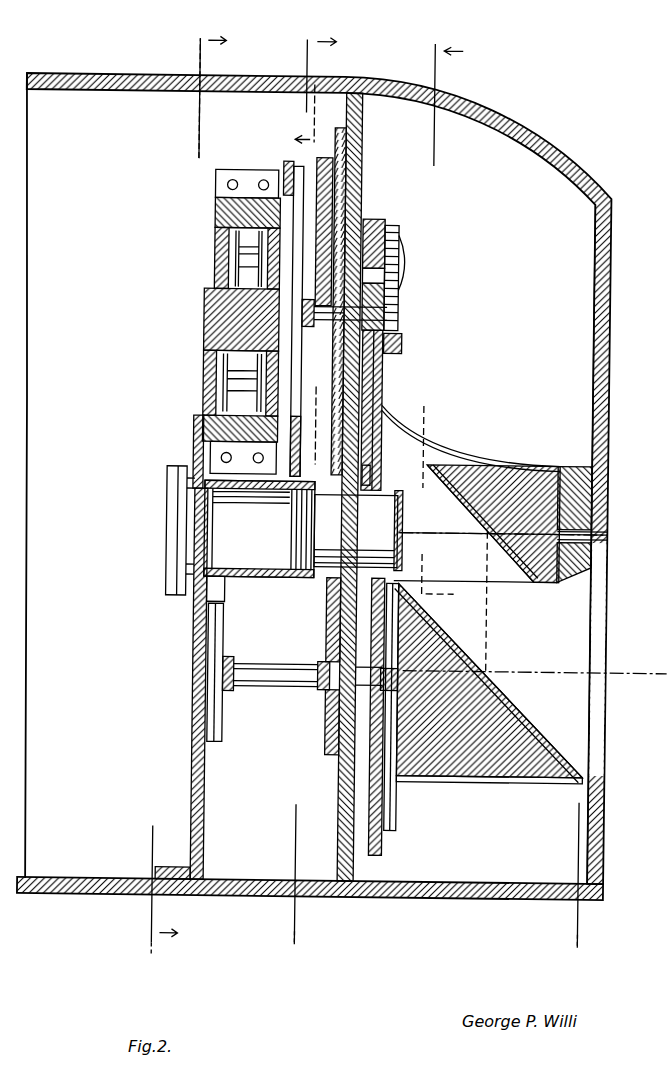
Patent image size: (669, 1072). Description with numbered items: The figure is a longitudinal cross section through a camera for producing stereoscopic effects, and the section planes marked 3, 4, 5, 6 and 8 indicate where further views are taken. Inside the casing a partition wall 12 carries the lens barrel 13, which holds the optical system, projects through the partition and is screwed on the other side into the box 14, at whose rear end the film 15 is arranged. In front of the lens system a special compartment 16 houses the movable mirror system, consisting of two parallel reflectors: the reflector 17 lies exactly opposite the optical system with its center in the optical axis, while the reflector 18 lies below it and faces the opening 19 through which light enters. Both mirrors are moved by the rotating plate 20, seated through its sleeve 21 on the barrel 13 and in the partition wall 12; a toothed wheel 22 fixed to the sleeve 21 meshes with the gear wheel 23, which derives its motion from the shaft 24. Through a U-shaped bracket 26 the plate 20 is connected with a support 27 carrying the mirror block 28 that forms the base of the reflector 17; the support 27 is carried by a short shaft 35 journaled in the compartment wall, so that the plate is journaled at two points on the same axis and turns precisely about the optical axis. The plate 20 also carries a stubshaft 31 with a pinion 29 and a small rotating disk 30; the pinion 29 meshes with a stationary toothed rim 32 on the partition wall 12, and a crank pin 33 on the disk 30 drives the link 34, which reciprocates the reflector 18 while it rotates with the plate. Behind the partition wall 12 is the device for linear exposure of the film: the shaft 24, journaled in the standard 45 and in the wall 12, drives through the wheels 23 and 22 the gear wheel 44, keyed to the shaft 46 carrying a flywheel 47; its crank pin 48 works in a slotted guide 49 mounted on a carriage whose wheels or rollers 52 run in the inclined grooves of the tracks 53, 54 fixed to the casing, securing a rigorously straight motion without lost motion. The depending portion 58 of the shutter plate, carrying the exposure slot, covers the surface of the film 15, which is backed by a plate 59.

The section line 3 is at (311, 486).
The section line 4 is at (506, 498).
The section line 5 is at (309, 282).
The section line 6 is at (186, 496).
The section line 8 is at (455, 531).
The partition wall 12 is at (359, 152).
The lens barrel 13 is at (358, 530).
The box 14 is at (268, 585).
The film 15 is at (170, 553).
The compartment 16 is at (609, 345).
The reflector 17 is at (522, 584).
The reflector 18 is at (525, 710).
The opening 19 is at (595, 708).
The rotating plate 20 is at (382, 372).
The sleeve 21 is at (365, 470).
The toothed wheel 22 is at (330, 590).
The gear wheel 23 is at (330, 748).
The shaft 24 is at (270, 665).
The U-shaped bracket 26 is at (455, 447).
The support 27 is at (593, 495).
The mirror block 28 is at (225, 725).
The pinion 29 is at (378, 222).
The small rotating disk 30 is at (385, 298).
The stubshaft 31 is at (384, 276).
The stationary toothed rim 32 is at (330, 710).
The crank pin 33 is at (400, 245).
The link 34 is at (400, 348).
The short shaft 35 is at (608, 532).
The gear wheel 44 is at (335, 380).
The standard 45 is at (195, 770).
The shaft 46 is at (203, 304).
The flywheel 47 is at (283, 200).
The crank pin 48 is at (290, 172).
The slotted guide 49 is at (203, 352).
The wheels or rollers 52 is at (213, 255).
The track 53 is at (213, 212).
The track 54 is at (203, 434).
The depending portion 58 is at (195, 465).
The plate 59 is at (210, 620).